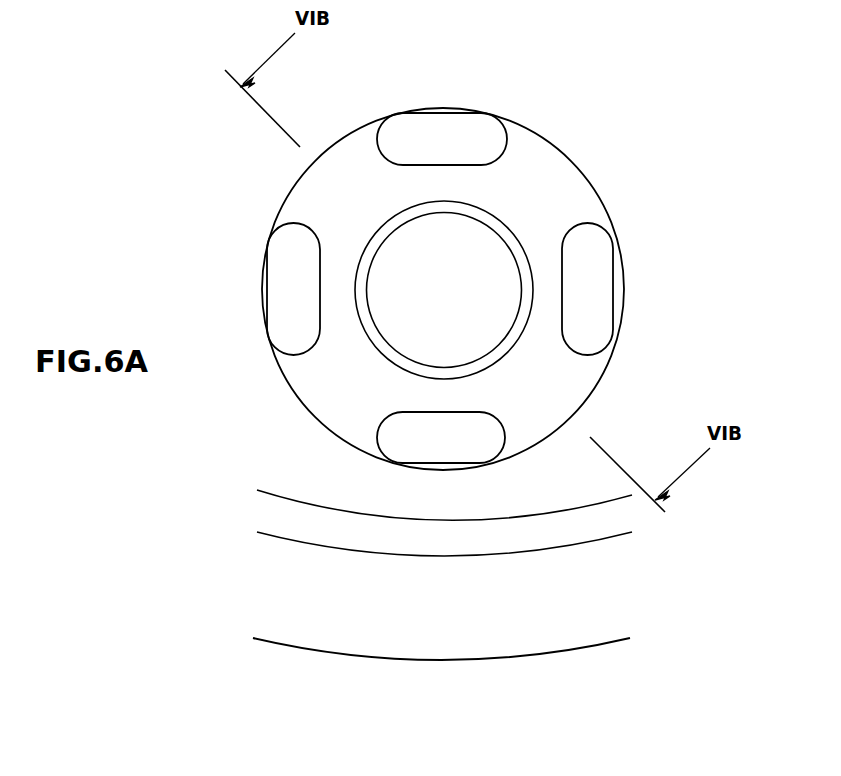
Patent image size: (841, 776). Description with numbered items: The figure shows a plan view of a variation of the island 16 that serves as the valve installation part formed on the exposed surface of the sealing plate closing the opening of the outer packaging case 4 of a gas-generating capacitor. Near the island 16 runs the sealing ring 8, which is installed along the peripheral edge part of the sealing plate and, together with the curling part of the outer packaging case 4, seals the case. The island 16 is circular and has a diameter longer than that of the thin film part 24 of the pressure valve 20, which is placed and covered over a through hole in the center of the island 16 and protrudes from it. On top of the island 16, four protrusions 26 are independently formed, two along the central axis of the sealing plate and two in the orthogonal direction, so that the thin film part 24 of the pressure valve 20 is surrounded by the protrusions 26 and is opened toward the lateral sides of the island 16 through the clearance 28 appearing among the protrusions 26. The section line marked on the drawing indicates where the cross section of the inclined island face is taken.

The outer packaging case 4 is at (257, 640).
The sealing ring 8 is at (268, 515).
The island 16 is at (553, 357).
The pressure valve 20 is at (383, 370).
The thin film part 24 is at (407, 267).
The protrusions 26 is at (592, 285).
The clearance 28 is at (535, 397).